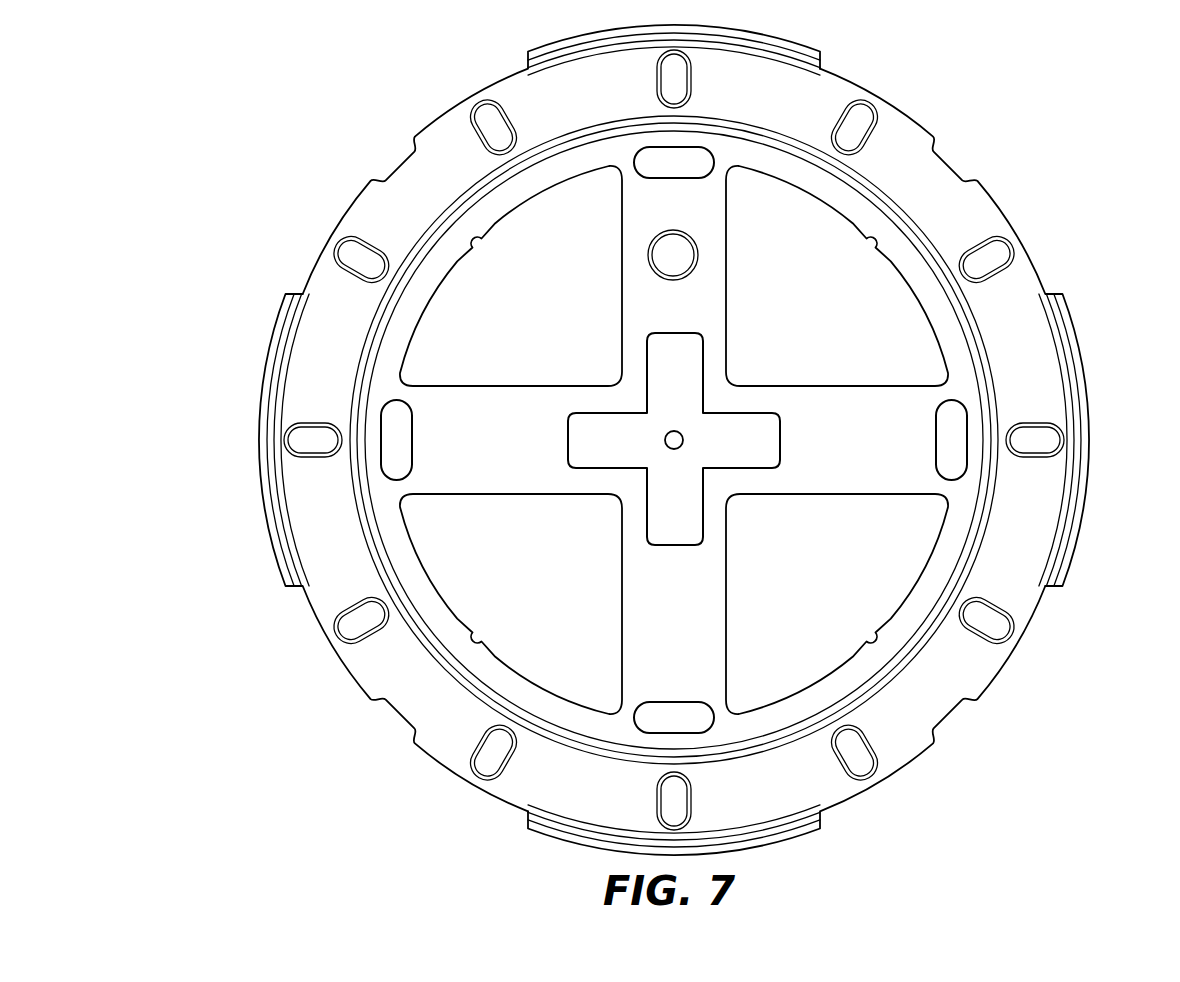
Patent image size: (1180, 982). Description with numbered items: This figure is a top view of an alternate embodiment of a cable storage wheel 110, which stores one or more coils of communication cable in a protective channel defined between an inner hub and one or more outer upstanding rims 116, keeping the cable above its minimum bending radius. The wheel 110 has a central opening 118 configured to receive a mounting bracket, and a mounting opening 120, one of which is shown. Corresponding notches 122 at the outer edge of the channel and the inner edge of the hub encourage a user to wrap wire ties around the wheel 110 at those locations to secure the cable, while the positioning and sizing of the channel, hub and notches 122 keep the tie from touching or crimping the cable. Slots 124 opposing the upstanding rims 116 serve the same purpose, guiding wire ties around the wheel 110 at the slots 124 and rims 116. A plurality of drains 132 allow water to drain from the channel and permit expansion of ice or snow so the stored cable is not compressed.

The cable storage wheel 110 is at (666, 450).
The outer upstanding rims 116 is at (563, 40).
The central opening 118 is at (675, 431).
The mounting opening 120 is at (699, 254).
The notches 122 is at (878, 648).
The slots 124 is at (657, 165).
The drains 132 is at (368, 637).